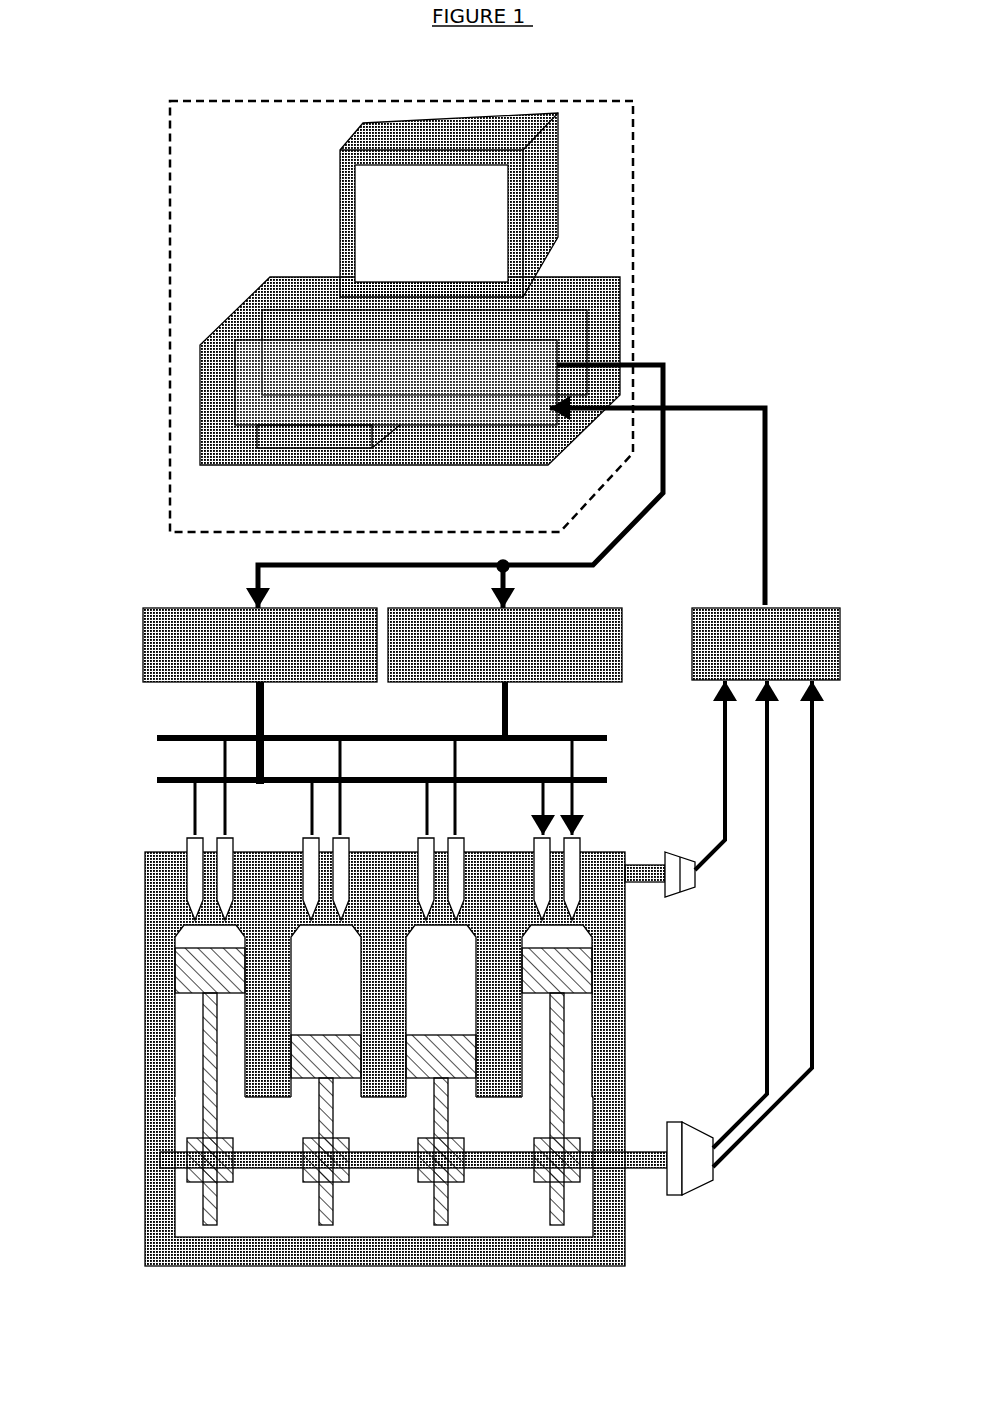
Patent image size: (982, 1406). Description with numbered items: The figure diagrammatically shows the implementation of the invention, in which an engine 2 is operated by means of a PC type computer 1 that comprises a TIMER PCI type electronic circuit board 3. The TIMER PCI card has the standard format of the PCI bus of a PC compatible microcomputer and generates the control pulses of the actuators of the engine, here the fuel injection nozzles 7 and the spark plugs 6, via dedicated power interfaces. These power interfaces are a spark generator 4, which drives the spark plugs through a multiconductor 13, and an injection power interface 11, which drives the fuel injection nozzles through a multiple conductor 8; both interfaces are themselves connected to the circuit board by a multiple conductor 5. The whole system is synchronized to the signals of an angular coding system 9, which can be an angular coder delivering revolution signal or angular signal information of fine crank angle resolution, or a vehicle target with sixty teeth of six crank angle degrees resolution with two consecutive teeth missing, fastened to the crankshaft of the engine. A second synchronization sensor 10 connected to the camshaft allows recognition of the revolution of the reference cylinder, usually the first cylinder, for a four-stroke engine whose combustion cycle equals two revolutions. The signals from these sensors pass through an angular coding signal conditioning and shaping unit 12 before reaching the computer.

The PC type computer 1 is at (401, 316).
The engine 2 is at (628, 1082).
The TIMER PCI type electronic circuit board 3 is at (256, 390).
The spark generator 4 is at (257, 648).
The multiple conductor 5 is at (667, 385).
The spark plugs 6 is at (182, 900).
The fuel injection nozzles 7 is at (582, 903).
The multiple conductor 8 is at (157, 737).
The angular coding system 9 is at (714, 1183).
The second synchronization sensor 10 is at (668, 848).
The injection power interface 11 is at (502, 650).
The angular coding signal conditioning and shaping unit 12 is at (762, 648).
The multiconductor 13 is at (157, 780).